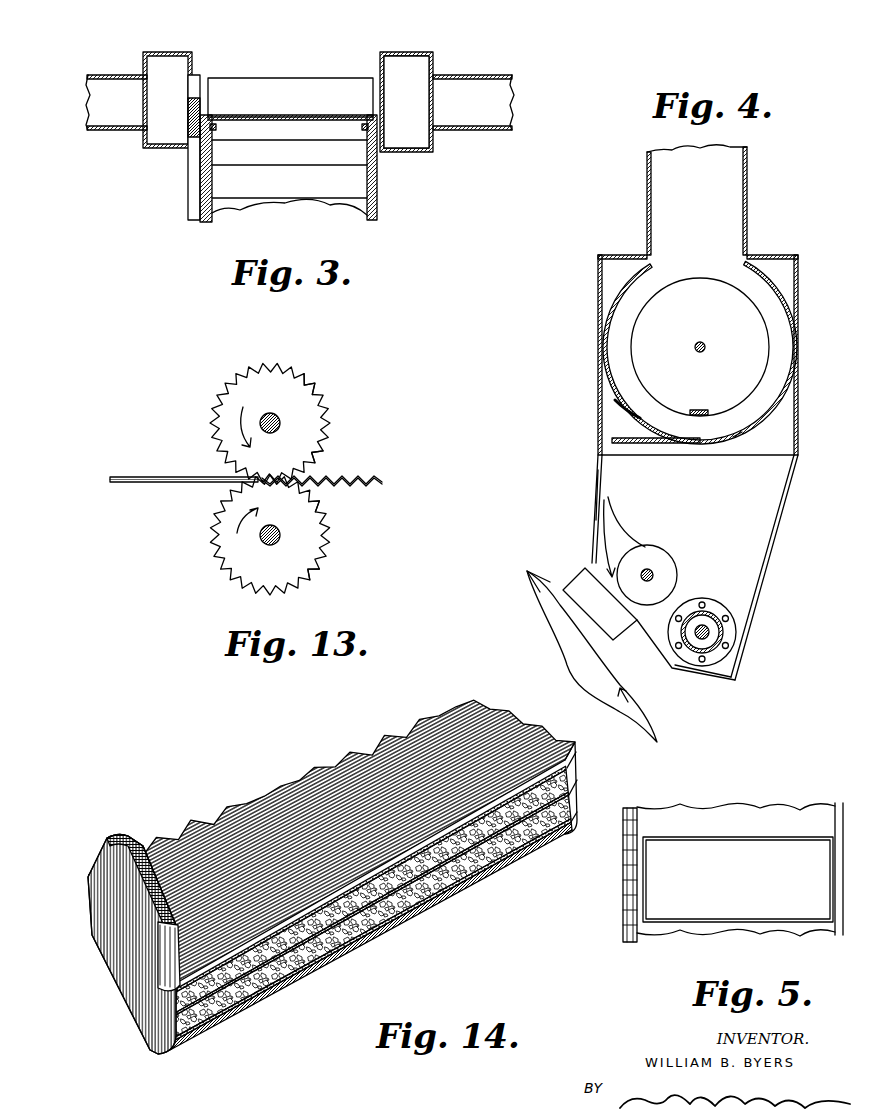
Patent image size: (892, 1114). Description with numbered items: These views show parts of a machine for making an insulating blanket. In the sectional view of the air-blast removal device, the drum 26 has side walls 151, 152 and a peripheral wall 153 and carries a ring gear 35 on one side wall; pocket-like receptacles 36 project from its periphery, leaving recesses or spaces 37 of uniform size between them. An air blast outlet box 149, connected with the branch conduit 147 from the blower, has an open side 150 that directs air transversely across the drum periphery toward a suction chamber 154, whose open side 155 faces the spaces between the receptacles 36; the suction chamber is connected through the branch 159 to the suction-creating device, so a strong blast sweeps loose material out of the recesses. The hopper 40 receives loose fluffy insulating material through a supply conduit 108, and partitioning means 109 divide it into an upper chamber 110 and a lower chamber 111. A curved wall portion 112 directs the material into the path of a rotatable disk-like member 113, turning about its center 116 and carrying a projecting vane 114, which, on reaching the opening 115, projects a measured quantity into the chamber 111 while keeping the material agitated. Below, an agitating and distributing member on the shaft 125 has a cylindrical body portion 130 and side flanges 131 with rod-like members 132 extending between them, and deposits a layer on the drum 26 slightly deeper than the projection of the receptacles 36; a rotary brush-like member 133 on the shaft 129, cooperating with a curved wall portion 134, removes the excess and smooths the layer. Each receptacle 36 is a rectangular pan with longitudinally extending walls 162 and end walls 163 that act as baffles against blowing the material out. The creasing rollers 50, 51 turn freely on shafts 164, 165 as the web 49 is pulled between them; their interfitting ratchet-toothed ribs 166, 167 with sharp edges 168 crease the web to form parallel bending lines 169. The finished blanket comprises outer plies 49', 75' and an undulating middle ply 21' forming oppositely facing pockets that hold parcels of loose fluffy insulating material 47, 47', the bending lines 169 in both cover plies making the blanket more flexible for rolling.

In FIG. 3, the suction chamber 154 is at (148, 60).
In FIG. 3, the open side 155 is at (193, 72).
In FIG. 3, the pocket-like receptacle 36 is at (268, 86).
In FIG. 4, the pocket-like receptacle 36 is at (552, 580).
In FIG. 5, the pocket-like receptacle 36 is at (670, 873).
In FIG. 3, the peripheral wall 153 is at (314, 114).
In FIG. 3, the open side 150 is at (378, 66).
In FIG. 3, the air blast outlet box 149 is at (415, 60).
In FIG. 3, the branch conduit 147 is at (460, 76).
In FIG. 3, the intake branch 159 is at (120, 130).
In FIG. 3, the ring gear 35 is at (190, 110).
In FIG. 3, the side wall 152 is at (200, 187).
In FIG. 3, the side wall 151 is at (377, 178).
In FIG. 13, the rib 166 is at (292, 372).
In FIG. 13, the creasing roller 50 is at (296, 392).
In FIG. 13, the shaft 164 is at (280, 423).
In FIG. 13, the sharp edge 168 is at (320, 450).
In FIG. 13, the web of fibrous sheet material 49 is at (166, 464).
In FIG. 13, the outer ply 49' is at (352, 465).
In FIG. 14, the outer ply 49' is at (322, 885).
In FIG. 13, the bending line 169 is at (335, 484).
In FIG. 14, the bending line 169 is at (332, 778).
In FIG. 13, the rib 167 is at (320, 511).
In FIG. 13, the creasing roller 51 is at (305, 535).
In FIG. 13, the shaft 165 is at (262, 540).
In FIG. 4, the supply conduit 108 is at (750, 192).
In FIG. 4, the rotatable disk-like member 113 is at (760, 348).
In FIG. 4, the upper chamber 110 is at (601, 378).
In FIG. 4, the curved wall portion 112 is at (618, 396).
In FIG. 4, the fan shaft 116 is at (702, 353).
In FIG. 4, the projecting vane 114 is at (702, 410).
In FIG. 4, the partitioning means 109 is at (672, 445).
In FIG. 4, the opening 115 is at (730, 440).
In FIG. 4, the lower chamber 111 is at (600, 481).
In FIG. 4, the rotary brush-like member 133 is at (606, 520).
In FIG. 4, the curved wall portion 134 is at (612, 508).
In FIG. 4, the shaft 129 is at (622, 562).
In FIG. 4, the recess 37 is at (536, 578).
In FIG. 4, the hopper 40 is at (782, 538).
In FIG. 4, the side flange 131 is at (690, 600).
In FIG. 4, the cylindrical body portion 130 is at (718, 617).
In FIG. 4, the shaft 125 is at (712, 633).
In FIG. 4, the rod-like member 132 is at (728, 647).
In FIG. 4, the drum-like member 26 is at (645, 712).
In FIG. 5, the drum-like member 26 is at (815, 808).
In FIG. 14, the outer ply 75' is at (315, 936).
In FIG. 14, the parcel of loose fluffy insulating material 47 is at (379, 920).
In FIG. 14, the parcel of loose fluffy insulating material 47' is at (371, 892).
In FIG. 14, the undulating middle ply 21' is at (326, 912).
In FIG. 5, the longitudinally extending wall 162 is at (730, 838).
In FIG. 5, the end wall 163 is at (640, 856).